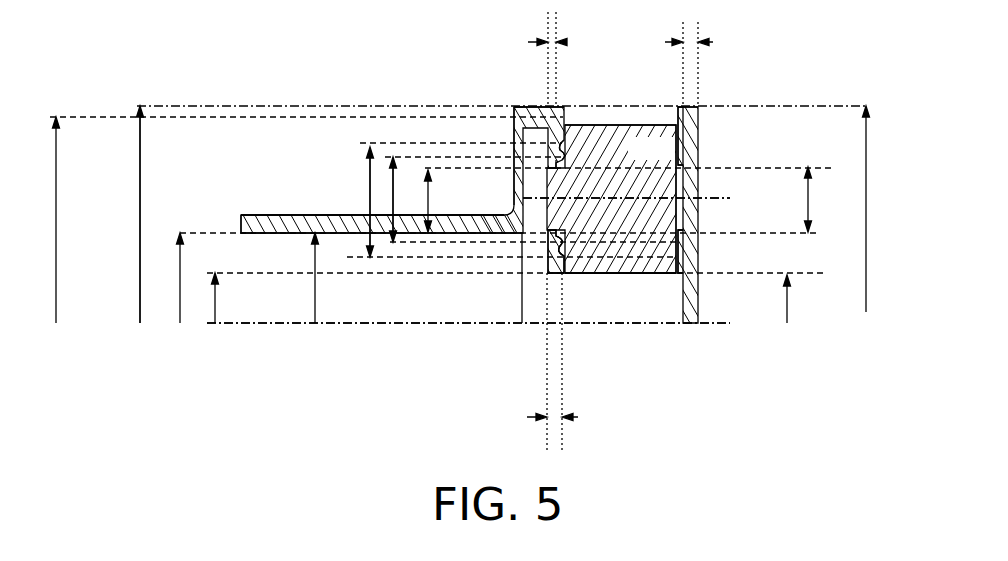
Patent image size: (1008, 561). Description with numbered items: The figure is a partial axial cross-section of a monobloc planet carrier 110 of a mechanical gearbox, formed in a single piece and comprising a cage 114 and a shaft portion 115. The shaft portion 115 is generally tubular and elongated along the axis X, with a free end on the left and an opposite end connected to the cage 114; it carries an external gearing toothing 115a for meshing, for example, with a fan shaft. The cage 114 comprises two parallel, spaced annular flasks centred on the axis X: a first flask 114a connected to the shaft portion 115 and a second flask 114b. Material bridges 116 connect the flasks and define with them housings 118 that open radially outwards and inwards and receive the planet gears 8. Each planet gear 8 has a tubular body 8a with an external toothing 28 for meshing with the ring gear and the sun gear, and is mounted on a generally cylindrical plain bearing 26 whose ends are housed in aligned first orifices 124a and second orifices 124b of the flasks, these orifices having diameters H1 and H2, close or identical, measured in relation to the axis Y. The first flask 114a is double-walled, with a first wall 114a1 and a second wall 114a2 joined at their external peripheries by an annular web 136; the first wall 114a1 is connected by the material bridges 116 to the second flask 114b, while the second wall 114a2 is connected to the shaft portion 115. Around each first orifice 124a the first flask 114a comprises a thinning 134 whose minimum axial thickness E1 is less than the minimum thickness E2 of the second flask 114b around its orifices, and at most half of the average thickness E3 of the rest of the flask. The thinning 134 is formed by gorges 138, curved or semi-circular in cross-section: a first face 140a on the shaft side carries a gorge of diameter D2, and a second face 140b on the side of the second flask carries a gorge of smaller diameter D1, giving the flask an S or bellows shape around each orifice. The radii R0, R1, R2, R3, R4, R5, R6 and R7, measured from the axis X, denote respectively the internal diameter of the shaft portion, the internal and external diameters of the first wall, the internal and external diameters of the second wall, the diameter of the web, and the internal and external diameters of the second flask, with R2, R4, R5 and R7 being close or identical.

The planet carrier 110 is at (504, 97).
The annular web 136 is at (553, 148).
The thinning 134 is at (551, 250).
The gorge 138 is at (509, 147).
The cage 114 is at (699, 104).
The first flask 114a is at (512, 147).
The first wall 114a1 is at (560, 104).
The second wall 114a2 is at (512, 204).
The second flask 114b is at (701, 128).
The material bridges 116 is at (620, 106).
The housings 118 is at (662, 281).
The shaft portion 115 is at (350, 211).
The external gearing toothing 115a is at (265, 214).
The first orifices 124a is at (545, 263).
The second orifices 124b is at (681, 232).
The first face 140a is at (556, 275).
The second face 140b is at (570, 275).
The planet gears 8 is at (661, 247).
The tubular body 8a is at (588, 274).
The plain bearing 26 is at (662, 183).
The external toothing 28 is at (625, 274).
The axis X is at (720, 323).
The axis Y is at (715, 198).
The internal diameter of the shaft portion R0 is at (301, 278).
The internal diameter of the first wall R1 is at (203, 298).
The external diameter of the first wall R2 is at (121, 214).
The internal diameter of the second wall R3 is at (166, 278).
The external diameter of the second wall R4 is at (122, 216).
The average or external diameter of the shell R5 is at (70, 220).
The internal diameter of the second flask R6 is at (802, 300).
The external diameter of the second flask R7 is at (851, 209).
The diameter of the first orifices H1 is at (399, 202).
The diameter of the second orifices H2 is at (823, 199).
The diameter of the gorge on the second face D1 is at (378, 237).
The diameter of the gorge on the first face D2 is at (368, 237).
The minimum thickness of the thinning E1 is at (556, 32).
The minimum thickness of the second flask E2 is at (701, 30).
The average thickness of the first flask E3 is at (561, 435).